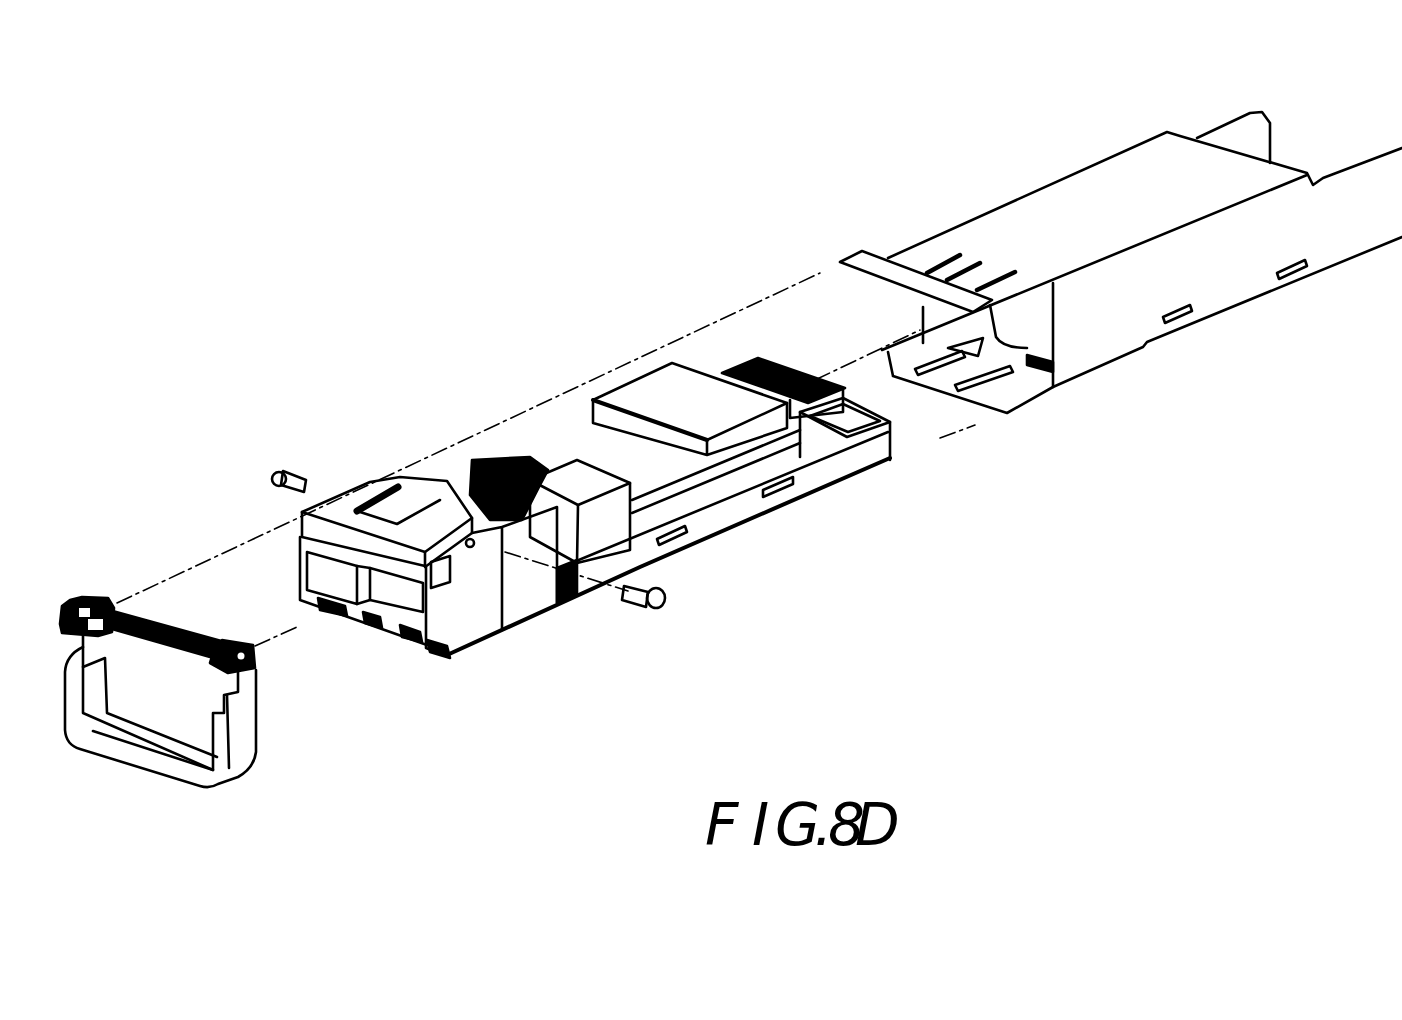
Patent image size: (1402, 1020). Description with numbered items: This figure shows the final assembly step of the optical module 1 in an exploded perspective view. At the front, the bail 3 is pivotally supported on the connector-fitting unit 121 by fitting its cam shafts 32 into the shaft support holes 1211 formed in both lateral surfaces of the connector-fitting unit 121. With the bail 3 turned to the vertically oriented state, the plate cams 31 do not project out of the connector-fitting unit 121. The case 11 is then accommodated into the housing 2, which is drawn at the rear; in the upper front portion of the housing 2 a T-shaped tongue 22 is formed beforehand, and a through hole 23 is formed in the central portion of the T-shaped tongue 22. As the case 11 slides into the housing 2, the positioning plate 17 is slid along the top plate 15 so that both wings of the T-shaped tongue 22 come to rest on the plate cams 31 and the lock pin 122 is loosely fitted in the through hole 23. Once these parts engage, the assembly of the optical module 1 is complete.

The optical module 1 is at (268, 192).
The housing 2 is at (1118, 312).
The bail 3 is at (243, 730).
The case 11 is at (540, 370).
The top plate 15 is at (723, 537).
The positioning plate 17 is at (660, 387).
The T-shaped tongue 22 is at (873, 273).
The through hole 23 is at (970, 270).
The plate cams 31 is at (80, 602).
The cam shafts 32 is at (276, 470).
The connector-fitting unit 121 is at (537, 603).
The lock pin 122 is at (462, 478).
The shaft support holes 1211 is at (468, 548).